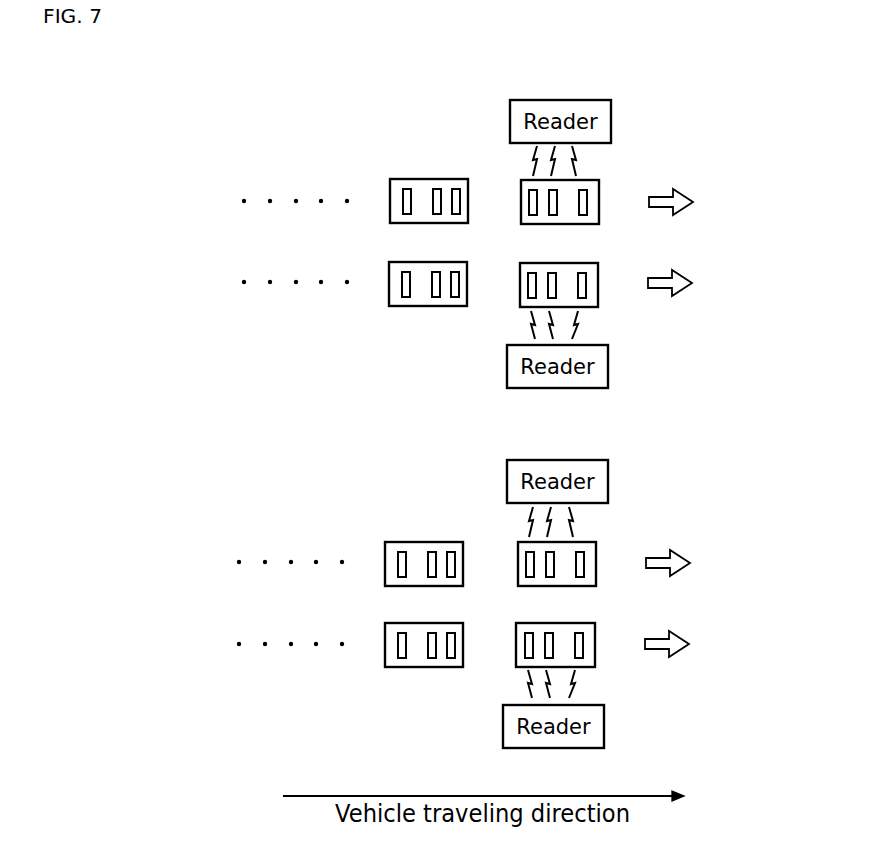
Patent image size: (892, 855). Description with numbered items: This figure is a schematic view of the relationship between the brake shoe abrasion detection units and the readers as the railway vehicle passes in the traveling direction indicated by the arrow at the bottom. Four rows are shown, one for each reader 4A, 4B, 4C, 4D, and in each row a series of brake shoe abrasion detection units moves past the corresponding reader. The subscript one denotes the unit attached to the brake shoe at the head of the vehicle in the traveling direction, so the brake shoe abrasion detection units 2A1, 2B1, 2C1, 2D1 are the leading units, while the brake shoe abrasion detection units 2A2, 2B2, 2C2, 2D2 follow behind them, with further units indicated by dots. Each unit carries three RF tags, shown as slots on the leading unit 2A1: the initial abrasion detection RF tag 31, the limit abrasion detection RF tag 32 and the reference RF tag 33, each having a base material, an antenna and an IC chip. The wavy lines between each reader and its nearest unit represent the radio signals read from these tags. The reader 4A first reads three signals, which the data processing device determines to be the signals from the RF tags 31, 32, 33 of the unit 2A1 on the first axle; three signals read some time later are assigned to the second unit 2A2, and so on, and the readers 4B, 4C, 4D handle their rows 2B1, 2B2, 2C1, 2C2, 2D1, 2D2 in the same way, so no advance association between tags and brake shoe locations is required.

The brake shoe abrasion detection unit 2D1 is at (599, 198).
The brake shoe abrasion detection unit 2D2 is at (390, 193).
The reader 4D is at (610, 122).
The brake shoe abrasion detection unit 2C1 is at (598, 287).
The brake shoe abrasion detection unit 2C2 is at (389, 290).
The reader 4C is at (609, 367).
The brake shoe abrasion detection unit 2B1 is at (596, 557).
The brake shoe abrasion detection unit 2B2 is at (385, 555).
The reader 4B is at (608, 481).
The brake shoe abrasion detection unit 2A1 is at (595, 652).
The brake shoe abrasion detection unit 2A2 is at (385, 650).
The reader 4A is at (605, 727).
The initial abrasion detection RF tag 31 is at (579, 636).
The limit abrasion detection RF tag 32 is at (549, 636).
The reference RF tag 33 is at (527, 636).